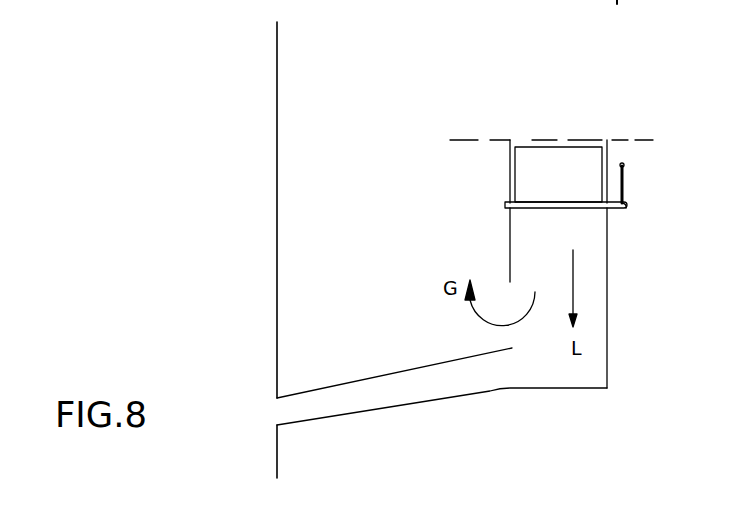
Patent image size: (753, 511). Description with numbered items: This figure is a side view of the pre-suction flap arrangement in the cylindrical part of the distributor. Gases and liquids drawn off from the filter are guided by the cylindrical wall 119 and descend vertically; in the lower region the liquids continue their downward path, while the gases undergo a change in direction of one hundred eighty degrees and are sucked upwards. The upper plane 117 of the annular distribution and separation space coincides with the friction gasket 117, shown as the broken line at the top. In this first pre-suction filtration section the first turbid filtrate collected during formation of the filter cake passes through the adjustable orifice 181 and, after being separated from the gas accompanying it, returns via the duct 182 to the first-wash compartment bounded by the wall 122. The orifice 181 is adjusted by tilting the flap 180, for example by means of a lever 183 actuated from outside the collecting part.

The upper plane / friction gasket 117 is at (463, 139).
The cylindrical wall 119 is at (509, 248).
The wall 122 is at (278, 238).
The flap 180 is at (572, 188).
The adjustable orifice 181 is at (502, 139).
The duct 182 is at (435, 398).
The lever 183 is at (622, 163).